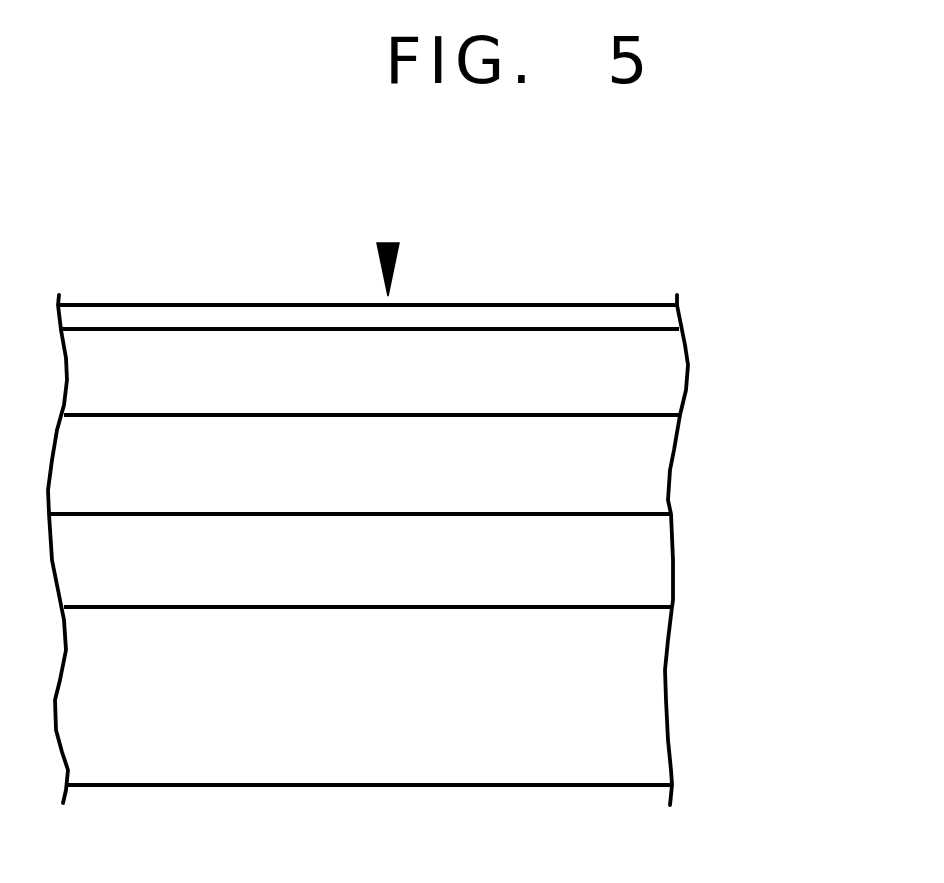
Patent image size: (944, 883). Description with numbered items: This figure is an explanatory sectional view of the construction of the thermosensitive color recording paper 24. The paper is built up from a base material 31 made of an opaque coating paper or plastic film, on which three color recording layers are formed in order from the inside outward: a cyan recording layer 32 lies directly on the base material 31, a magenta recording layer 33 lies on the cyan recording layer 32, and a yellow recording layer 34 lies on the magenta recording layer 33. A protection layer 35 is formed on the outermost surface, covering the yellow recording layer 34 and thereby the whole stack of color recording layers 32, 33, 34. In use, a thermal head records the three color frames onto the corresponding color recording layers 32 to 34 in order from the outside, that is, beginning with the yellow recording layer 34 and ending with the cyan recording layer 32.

The thermosensitive color recording paper 24 is at (388, 244).
The base material 31 is at (648, 707).
The cyan recording layer 32 is at (662, 570).
The magenta recording layer 33 is at (657, 472).
The yellow recording layer 34 is at (675, 382).
The protection layer 35 is at (667, 319).